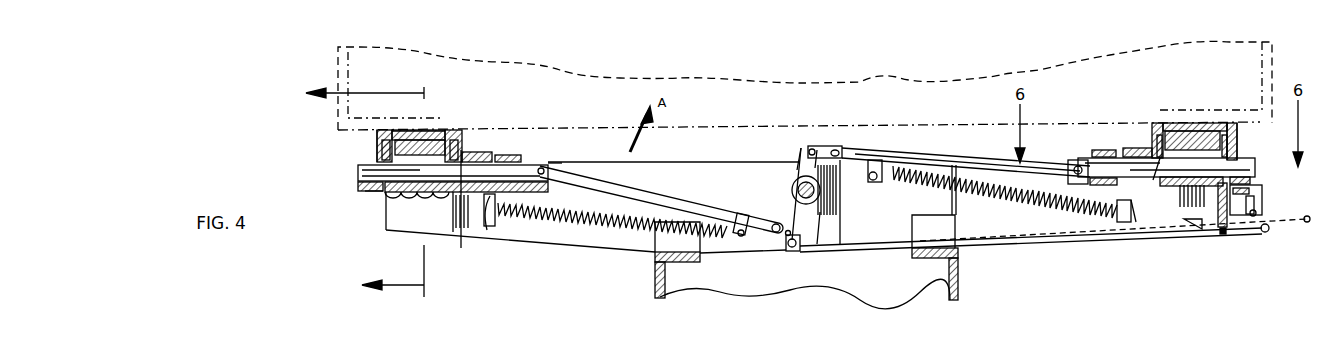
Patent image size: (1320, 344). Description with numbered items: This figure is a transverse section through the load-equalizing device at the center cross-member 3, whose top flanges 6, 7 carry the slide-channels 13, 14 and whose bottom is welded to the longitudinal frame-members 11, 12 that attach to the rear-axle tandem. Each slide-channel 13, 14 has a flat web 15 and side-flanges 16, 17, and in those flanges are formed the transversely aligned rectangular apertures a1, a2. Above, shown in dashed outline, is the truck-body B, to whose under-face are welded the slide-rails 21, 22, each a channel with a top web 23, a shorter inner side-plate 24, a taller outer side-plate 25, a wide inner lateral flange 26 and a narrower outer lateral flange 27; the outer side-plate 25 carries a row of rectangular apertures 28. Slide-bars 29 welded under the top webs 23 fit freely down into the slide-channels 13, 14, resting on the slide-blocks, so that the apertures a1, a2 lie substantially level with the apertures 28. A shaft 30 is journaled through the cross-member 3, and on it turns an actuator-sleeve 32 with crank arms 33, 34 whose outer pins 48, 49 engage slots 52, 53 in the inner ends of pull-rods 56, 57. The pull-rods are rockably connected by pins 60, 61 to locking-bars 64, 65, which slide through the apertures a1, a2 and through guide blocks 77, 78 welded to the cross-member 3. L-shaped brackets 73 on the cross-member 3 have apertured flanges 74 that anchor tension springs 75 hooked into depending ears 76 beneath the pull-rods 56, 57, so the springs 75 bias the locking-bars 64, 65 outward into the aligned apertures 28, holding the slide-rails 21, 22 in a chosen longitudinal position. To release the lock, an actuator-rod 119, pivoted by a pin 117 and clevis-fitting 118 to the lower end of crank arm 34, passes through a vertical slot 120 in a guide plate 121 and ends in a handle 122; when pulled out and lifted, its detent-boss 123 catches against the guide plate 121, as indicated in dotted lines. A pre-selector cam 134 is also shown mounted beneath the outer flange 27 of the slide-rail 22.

The cross-member 3 is at (560, 247).
The top flange 6 is at (799, 131).
The top flange 7 is at (355, 191).
The longitudinal frame-member 11 is at (655, 257).
The longitudinal frame-member 12 is at (958, 276).
The slide-channel 13 is at (400, 194).
The slide-channel 14 is at (1190, 186).
The web 15 is at (420, 198).
The side-flange 16 is at (475, 152).
The side-flange 17 is at (382, 142).
The slide-rail 21 is at (450, 132).
The slide-rail 22 is at (1184, 123).
The top web 23 is at (1206, 123).
The inner side-plate 24 is at (462, 130).
The outer side-plate 25 is at (377, 152).
The inner lateral flange 26 is at (510, 155).
The outer lateral flange 27 is at (358, 187).
The aperture 28 is at (1237, 158).
The slide-bar 29 is at (428, 140).
The shaft 30 is at (815, 192).
The actuator-sleeve 32 is at (792, 182).
The crank arm 33 is at (800, 150).
The crank arm 34 is at (825, 212).
The pin 48 is at (812, 147).
The pin 49 is at (789, 238).
The slot 52 is at (842, 150).
The slot 53 is at (770, 232).
The pull-rod 56 is at (655, 195).
The pull-rod 57 is at (955, 160).
The pin 60 is at (548, 162).
The pin 61 is at (1070, 165).
The locking-bar 64 is at (360, 172).
The locking-bar 65 is at (1176, 170).
The L-shaped bracket 73 is at (488, 210).
The apertured flange 74 is at (495, 215).
The tension spring 75 is at (600, 236).
The depending ear 76 is at (743, 214).
The guide block 77 is at (553, 160).
The guide block 78 is at (1098, 150).
The pin 117 is at (789, 251).
The clevis-fitting 118 is at (815, 253).
The actuator-rod 119 is at (1036, 245).
The vertical slot 120 is at (1220, 238).
The vertical guide plate 121 is at (1225, 236).
The handle 122 is at (1268, 232).
The detent-boss 123 is at (1190, 230).
The pre-selector cam 134 is at (1258, 213).
The rectangular aperture a1 is at (461, 232).
The rectangular aperture a2 is at (365, 191).
The truck-body B is at (334, 66).